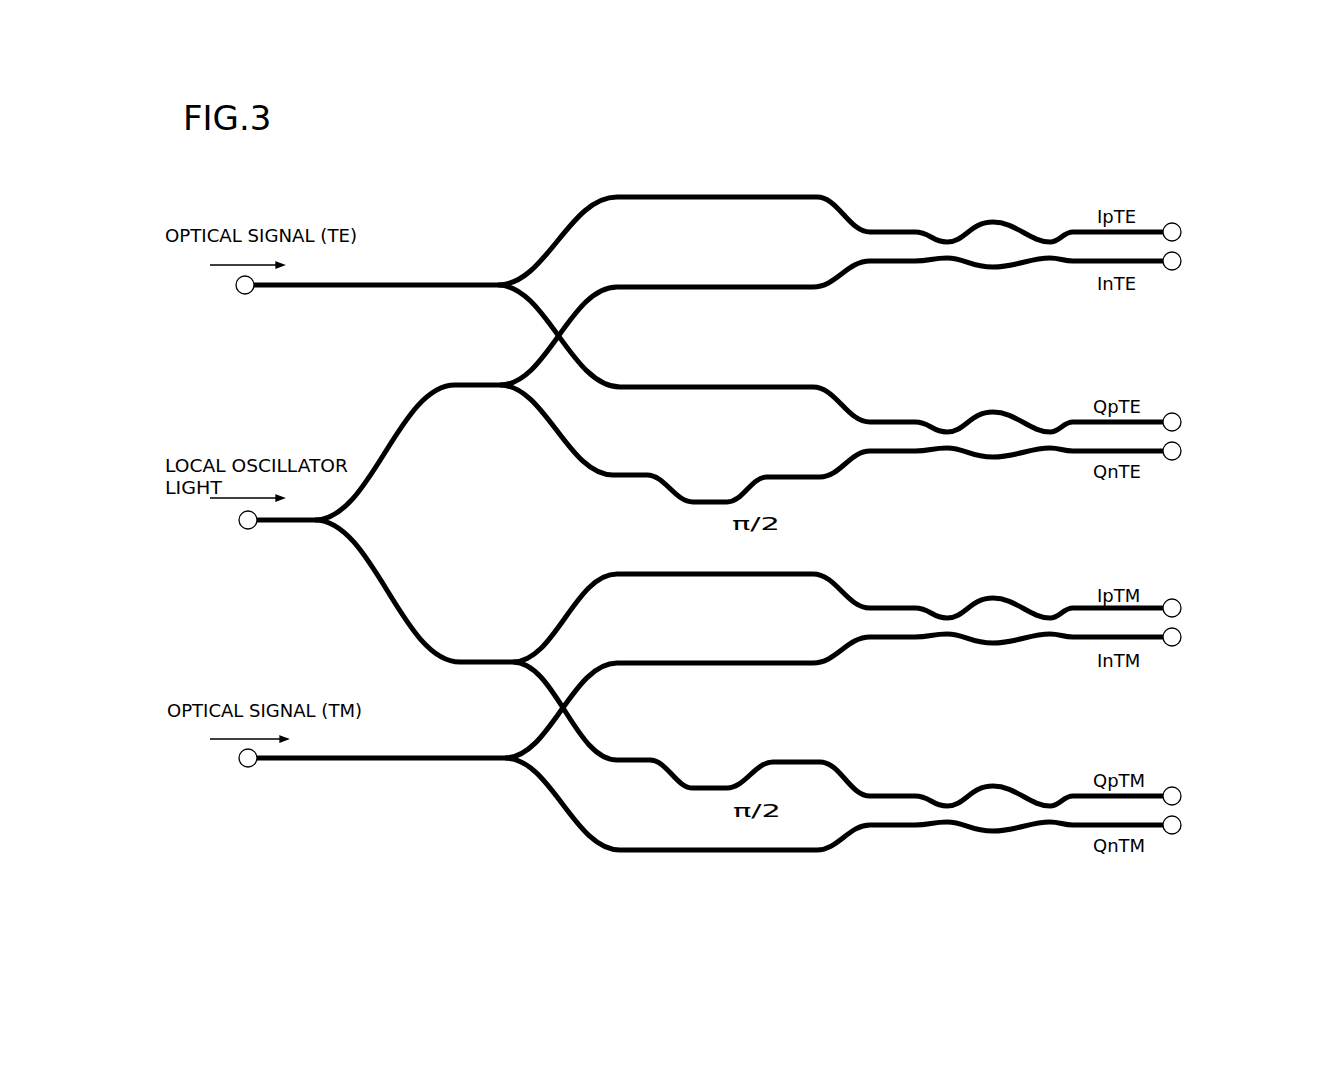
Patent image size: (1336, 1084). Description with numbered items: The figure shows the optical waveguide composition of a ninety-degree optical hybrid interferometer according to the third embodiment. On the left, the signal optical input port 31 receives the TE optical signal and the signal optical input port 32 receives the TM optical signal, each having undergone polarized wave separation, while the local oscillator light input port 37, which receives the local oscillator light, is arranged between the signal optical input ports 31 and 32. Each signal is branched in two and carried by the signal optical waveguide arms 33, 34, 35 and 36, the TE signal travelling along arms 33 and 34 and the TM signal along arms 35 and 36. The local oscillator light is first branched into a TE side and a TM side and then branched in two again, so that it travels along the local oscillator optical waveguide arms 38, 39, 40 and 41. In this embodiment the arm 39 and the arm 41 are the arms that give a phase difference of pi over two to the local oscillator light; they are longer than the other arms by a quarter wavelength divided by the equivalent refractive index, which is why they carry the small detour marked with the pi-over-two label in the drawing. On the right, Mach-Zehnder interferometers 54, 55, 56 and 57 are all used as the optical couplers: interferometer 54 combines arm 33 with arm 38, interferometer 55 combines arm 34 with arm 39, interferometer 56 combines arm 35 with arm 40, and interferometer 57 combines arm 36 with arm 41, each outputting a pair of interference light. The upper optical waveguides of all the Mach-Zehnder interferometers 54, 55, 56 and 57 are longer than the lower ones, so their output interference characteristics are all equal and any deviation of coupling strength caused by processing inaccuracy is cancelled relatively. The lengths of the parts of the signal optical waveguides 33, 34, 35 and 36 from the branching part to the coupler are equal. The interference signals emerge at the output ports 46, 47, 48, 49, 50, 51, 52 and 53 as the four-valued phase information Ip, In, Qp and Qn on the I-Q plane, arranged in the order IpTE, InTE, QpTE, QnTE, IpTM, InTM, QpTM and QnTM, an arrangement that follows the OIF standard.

The signal optical input port 31 is at (242, 293).
The signal optical input port 32 is at (243, 766).
The local oscillator light input port 37 is at (243, 528).
The signal optical waveguide arm 33 is at (727, 199).
The signal optical waveguide arm 34 is at (727, 389).
The signal optical waveguide arm 35 is at (727, 665).
The signal optical waveguide arm 36 is at (630, 852).
The local oscillator optical waveguide arm 38 is at (727, 289).
The local oscillator optical waveguide arm 39 is at (647, 477).
The local oscillator optical waveguide arm 40 is at (812, 576).
The local oscillator optical waveguide arm 41 is at (817, 762).
The output port 46 is at (1178, 226).
The output port 47 is at (1178, 268).
The output port 48 is at (1178, 416).
The output port 49 is at (1178, 458).
The output port 50 is at (1178, 602).
The output port 51 is at (1178, 644).
The output port 52 is at (1178, 790).
The output port 53 is at (1178, 832).
The Mach-Zehnder interferometer 54 is at (1013, 222).
The Mach-Zehnder interferometer 55 is at (1013, 412).
The Mach-Zehnder interferometer 56 is at (1013, 599).
The Mach-Zehnder interferometer 57 is at (1013, 787).